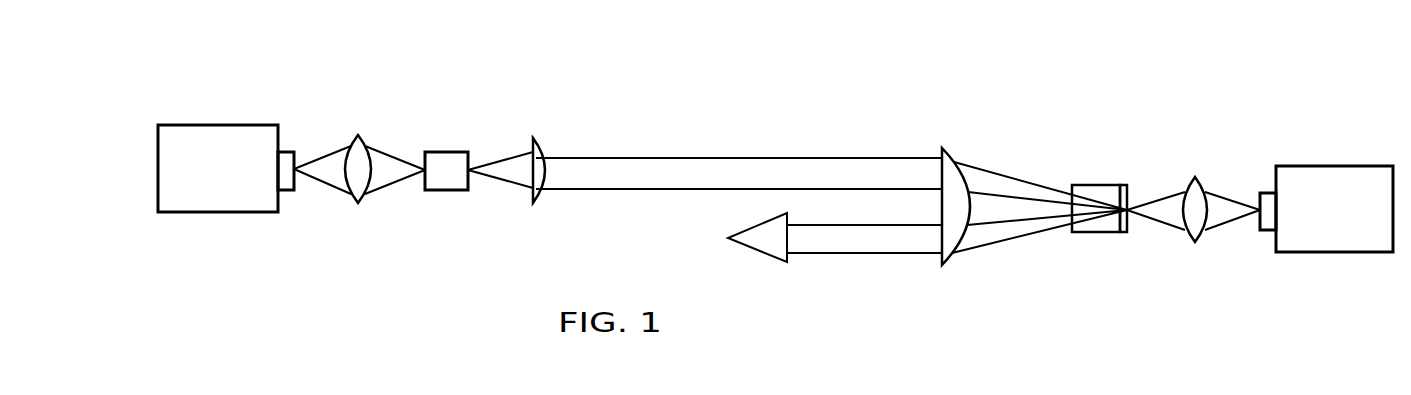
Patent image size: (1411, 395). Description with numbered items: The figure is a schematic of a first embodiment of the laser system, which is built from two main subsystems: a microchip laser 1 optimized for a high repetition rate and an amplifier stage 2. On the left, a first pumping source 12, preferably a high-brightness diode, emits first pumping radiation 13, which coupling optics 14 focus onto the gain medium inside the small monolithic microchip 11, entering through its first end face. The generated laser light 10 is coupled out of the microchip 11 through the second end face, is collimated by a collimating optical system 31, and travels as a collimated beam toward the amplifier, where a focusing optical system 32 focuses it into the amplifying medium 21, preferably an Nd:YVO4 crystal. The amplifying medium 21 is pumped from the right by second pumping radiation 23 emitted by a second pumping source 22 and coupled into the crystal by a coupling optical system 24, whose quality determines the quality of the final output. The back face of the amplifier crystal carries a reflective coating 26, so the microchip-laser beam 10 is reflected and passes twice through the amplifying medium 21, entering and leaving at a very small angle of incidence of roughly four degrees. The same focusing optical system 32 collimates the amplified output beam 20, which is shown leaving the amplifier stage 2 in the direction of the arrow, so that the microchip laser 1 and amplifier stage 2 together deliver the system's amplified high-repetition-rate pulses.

The microchip laser 1 is at (372, 103).
The amplifier stage 2 is at (1167, 142).
The laser light 10 is at (620, 175).
The microchip 11 is at (443, 182).
The first pumping source 12 is at (215, 195).
The first pumping radiation 13 is at (322, 175).
The coupling optics 14 is at (358, 205).
The output beam 20 is at (853, 242).
The amplifying medium 21 is at (1093, 225).
The second pumping source 22 is at (1323, 235).
The second pumping radiation 23 is at (1220, 218).
The coupling optical system 24 is at (1192, 243).
The reflective coating 26 is at (1123, 233).
The collimating optical system 31 is at (532, 203).
The focusing optical system 32 is at (947, 265).